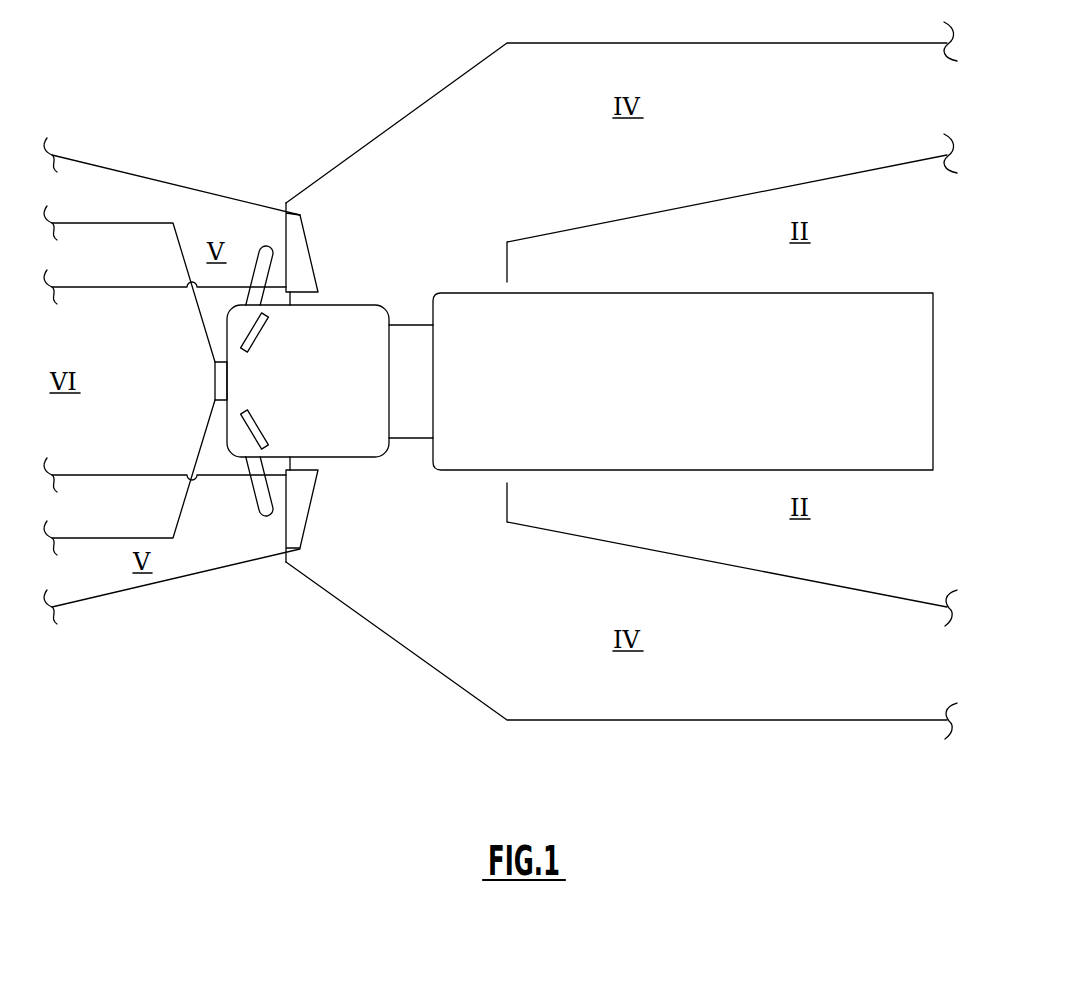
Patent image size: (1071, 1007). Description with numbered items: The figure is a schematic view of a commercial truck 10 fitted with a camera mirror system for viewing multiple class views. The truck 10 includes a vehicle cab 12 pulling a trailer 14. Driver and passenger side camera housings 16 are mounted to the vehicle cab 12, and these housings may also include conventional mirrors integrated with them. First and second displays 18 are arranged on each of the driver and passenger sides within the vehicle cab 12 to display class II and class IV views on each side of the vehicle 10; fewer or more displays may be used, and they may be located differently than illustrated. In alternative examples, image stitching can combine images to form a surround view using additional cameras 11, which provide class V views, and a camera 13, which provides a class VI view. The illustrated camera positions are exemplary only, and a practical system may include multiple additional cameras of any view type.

The commercial truck 10 is at (180, 335).
The additional cameras 11 is at (312, 298).
The vehicle cab 12 is at (216, 440).
The camera 13 is at (215, 380).
The trailer 14 is at (898, 281).
The camera housings 16 is at (259, 264).
The displays 18 is at (258, 339).